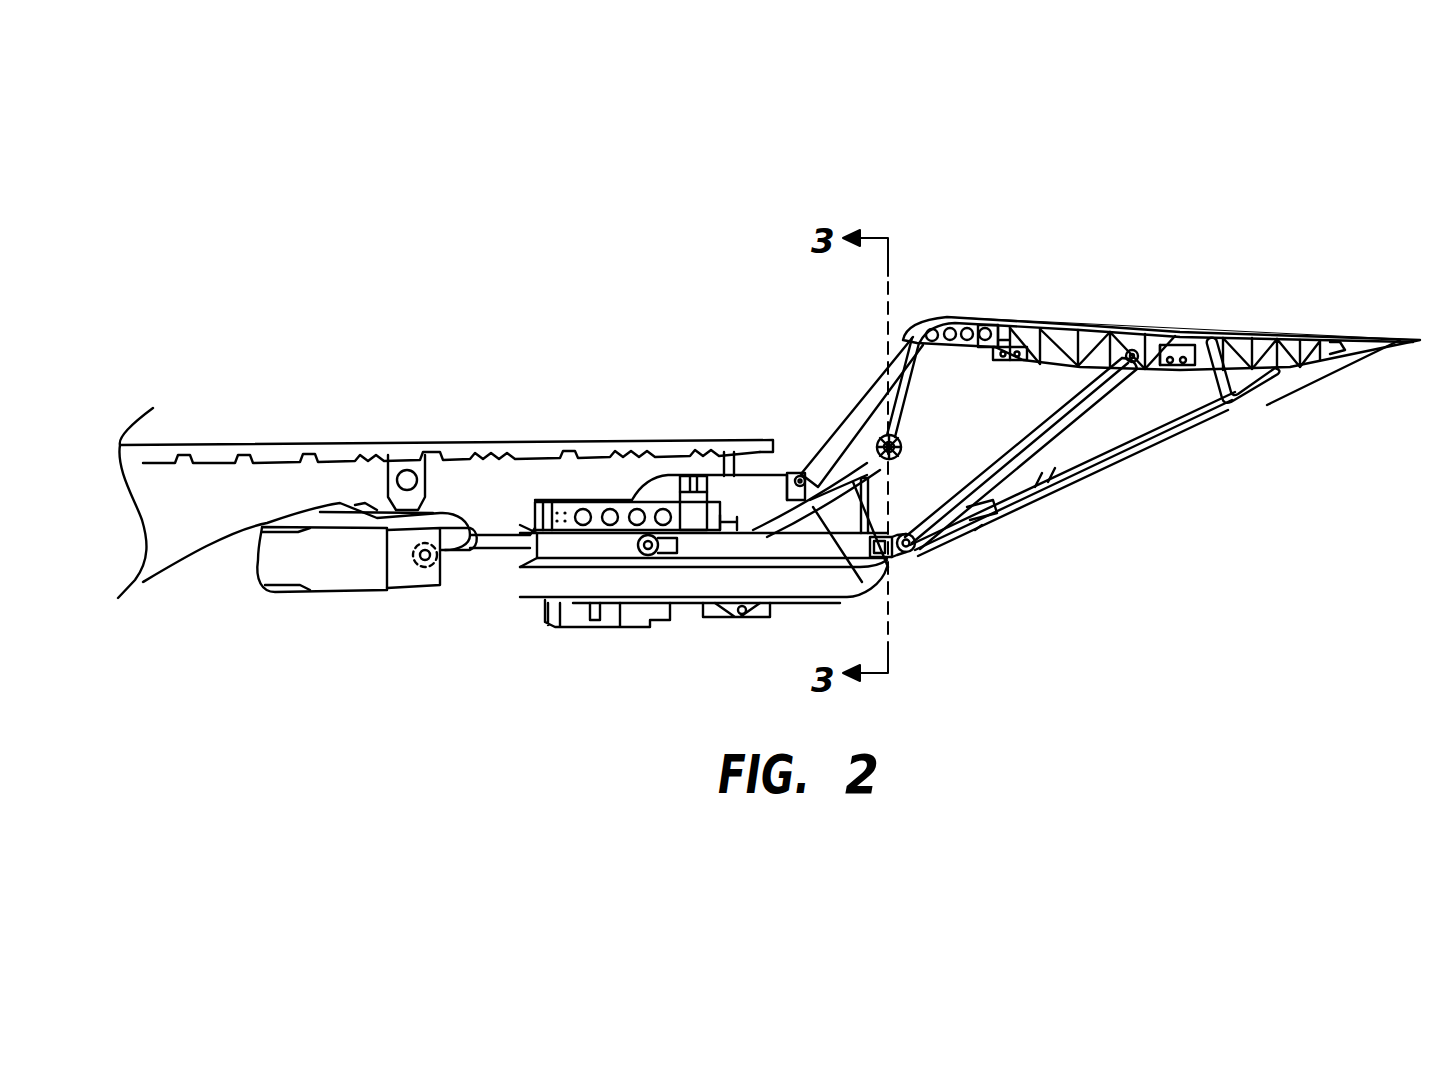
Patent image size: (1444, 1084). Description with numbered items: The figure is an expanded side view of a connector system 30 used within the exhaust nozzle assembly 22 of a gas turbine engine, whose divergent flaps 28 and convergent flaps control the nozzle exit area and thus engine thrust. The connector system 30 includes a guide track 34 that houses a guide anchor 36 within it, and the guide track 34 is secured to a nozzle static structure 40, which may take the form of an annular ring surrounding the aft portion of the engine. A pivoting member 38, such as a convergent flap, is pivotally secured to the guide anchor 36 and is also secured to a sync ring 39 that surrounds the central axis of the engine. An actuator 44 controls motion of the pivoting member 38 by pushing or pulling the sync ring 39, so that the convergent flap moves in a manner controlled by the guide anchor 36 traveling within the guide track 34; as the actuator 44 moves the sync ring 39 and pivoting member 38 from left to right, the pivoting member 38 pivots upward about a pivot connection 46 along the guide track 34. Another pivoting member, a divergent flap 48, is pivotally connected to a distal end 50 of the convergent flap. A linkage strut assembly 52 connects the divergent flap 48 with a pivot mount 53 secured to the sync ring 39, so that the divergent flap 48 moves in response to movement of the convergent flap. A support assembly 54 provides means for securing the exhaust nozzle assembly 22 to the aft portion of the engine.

The exhaust nozzle assembly 22 is at (1000, 269).
The divergent flaps 28 is at (1190, 325).
The connector system 30 is at (790, 385).
The guide track 34 is at (887, 572).
The guide anchor 36 is at (900, 449).
The pivoting member 38 is at (880, 368).
The sync ring 39 is at (687, 511).
The nozzle static structure 40 is at (747, 516).
The actuator 44 is at (257, 577).
The pivot connection 46 is at (799, 475).
The divergent flap 48 is at (1297, 362).
The distal end 50 is at (910, 338).
The linkage strut assembly 52 is at (1092, 405).
The pivot mount 53 is at (913, 553).
The support assembly 54 is at (378, 477).